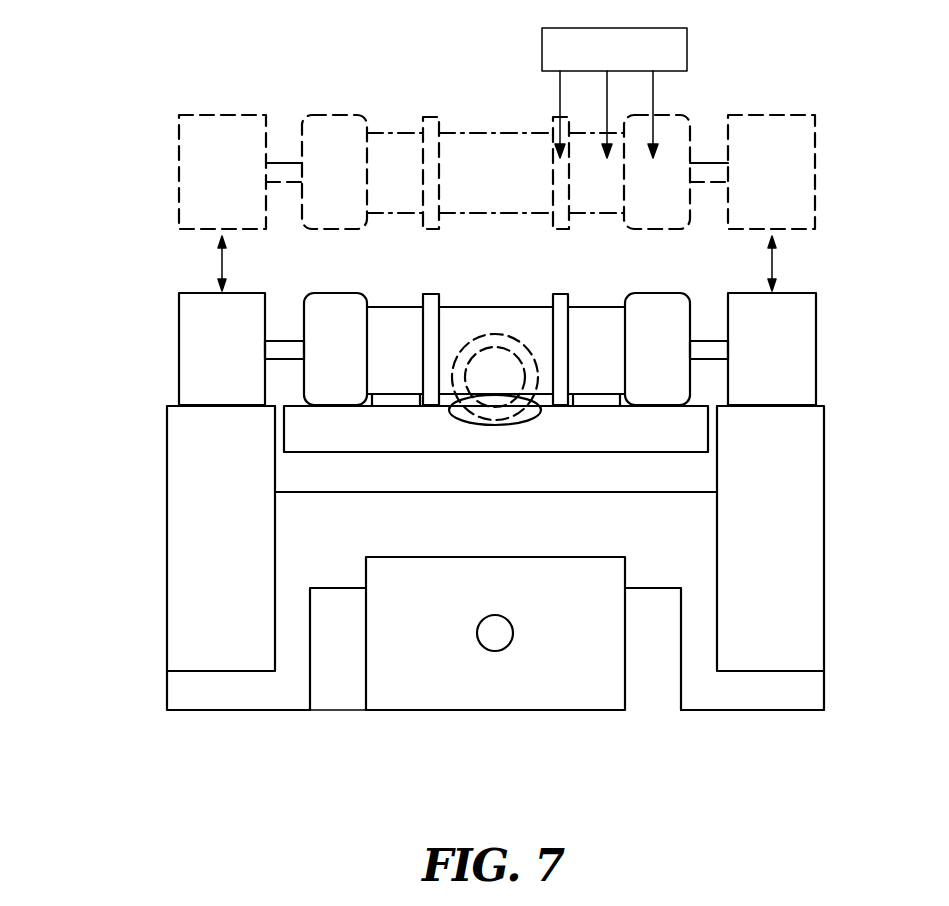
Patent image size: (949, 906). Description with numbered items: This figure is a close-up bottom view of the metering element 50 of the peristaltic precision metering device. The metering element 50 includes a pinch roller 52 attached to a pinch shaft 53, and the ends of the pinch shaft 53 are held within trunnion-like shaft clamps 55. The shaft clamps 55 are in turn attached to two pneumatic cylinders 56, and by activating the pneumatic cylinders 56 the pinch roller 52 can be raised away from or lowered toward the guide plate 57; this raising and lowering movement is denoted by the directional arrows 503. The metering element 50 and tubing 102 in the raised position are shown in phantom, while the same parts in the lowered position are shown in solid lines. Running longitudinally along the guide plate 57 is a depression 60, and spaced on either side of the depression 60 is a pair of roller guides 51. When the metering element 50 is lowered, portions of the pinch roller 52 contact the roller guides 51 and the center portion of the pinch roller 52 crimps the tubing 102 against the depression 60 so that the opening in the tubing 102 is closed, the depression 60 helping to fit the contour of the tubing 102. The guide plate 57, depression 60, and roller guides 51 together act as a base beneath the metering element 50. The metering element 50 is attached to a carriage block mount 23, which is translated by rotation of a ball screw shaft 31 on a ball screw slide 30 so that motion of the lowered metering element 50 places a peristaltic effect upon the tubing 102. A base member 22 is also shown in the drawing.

The metering element 50 is at (860, 124).
The directional arrows 503 is at (222, 262).
The shaft clamps 55 is at (190, 355).
The pinch shaft 53 is at (279, 346).
The pinch roller 52 is at (468, 318).
The roller guides 51 is at (390, 399).
The guide plate 57 is at (419, 436).
The depression 60 is at (530, 422).
The tubing 102 is at (464, 420).
The pneumatic cylinders 56 is at (183, 525).
The base member 22 is at (440, 697).
The ball screw shaft 31 is at (480, 633).
The carriage block mount 23 is at (803, 700).
The ball screw slide 30 is at (650, 733).